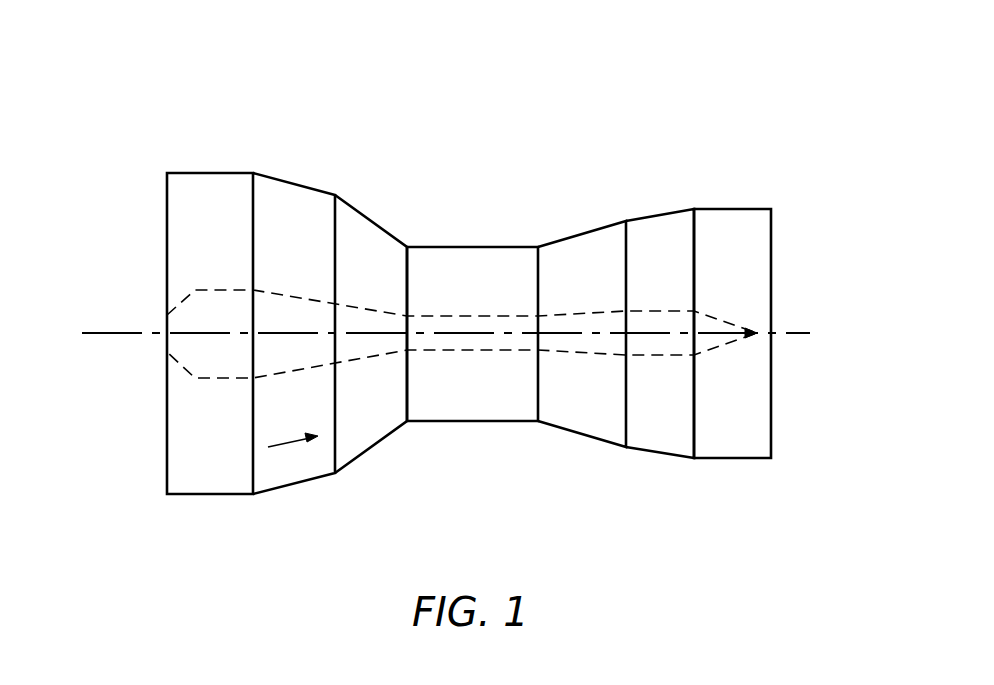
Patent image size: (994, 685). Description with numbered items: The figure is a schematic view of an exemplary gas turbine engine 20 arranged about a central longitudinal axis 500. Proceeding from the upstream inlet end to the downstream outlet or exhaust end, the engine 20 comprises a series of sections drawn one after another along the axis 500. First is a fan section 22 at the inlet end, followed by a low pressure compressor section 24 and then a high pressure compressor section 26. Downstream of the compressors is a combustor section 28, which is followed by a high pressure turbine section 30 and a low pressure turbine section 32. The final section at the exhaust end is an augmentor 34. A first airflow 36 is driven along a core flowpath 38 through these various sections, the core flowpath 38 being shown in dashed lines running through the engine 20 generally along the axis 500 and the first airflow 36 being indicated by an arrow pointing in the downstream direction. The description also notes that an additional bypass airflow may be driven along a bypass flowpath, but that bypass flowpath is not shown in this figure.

The engine 20 is at (585, 128).
The fan section 22 is at (210, 220).
The low pressure compressor section 24 is at (283, 230).
The high pressure compressor section 26 is at (363, 245).
The combustor section 28 is at (478, 258).
The high pressure turbine section 30 is at (578, 250).
The low pressure turbine section 32 is at (658, 232).
The augmentor 34 is at (733, 225).
The first airflow 36 is at (287, 447).
The core flowpath 38 is at (364, 405).
The central longitudinal axis 500 is at (785, 333).